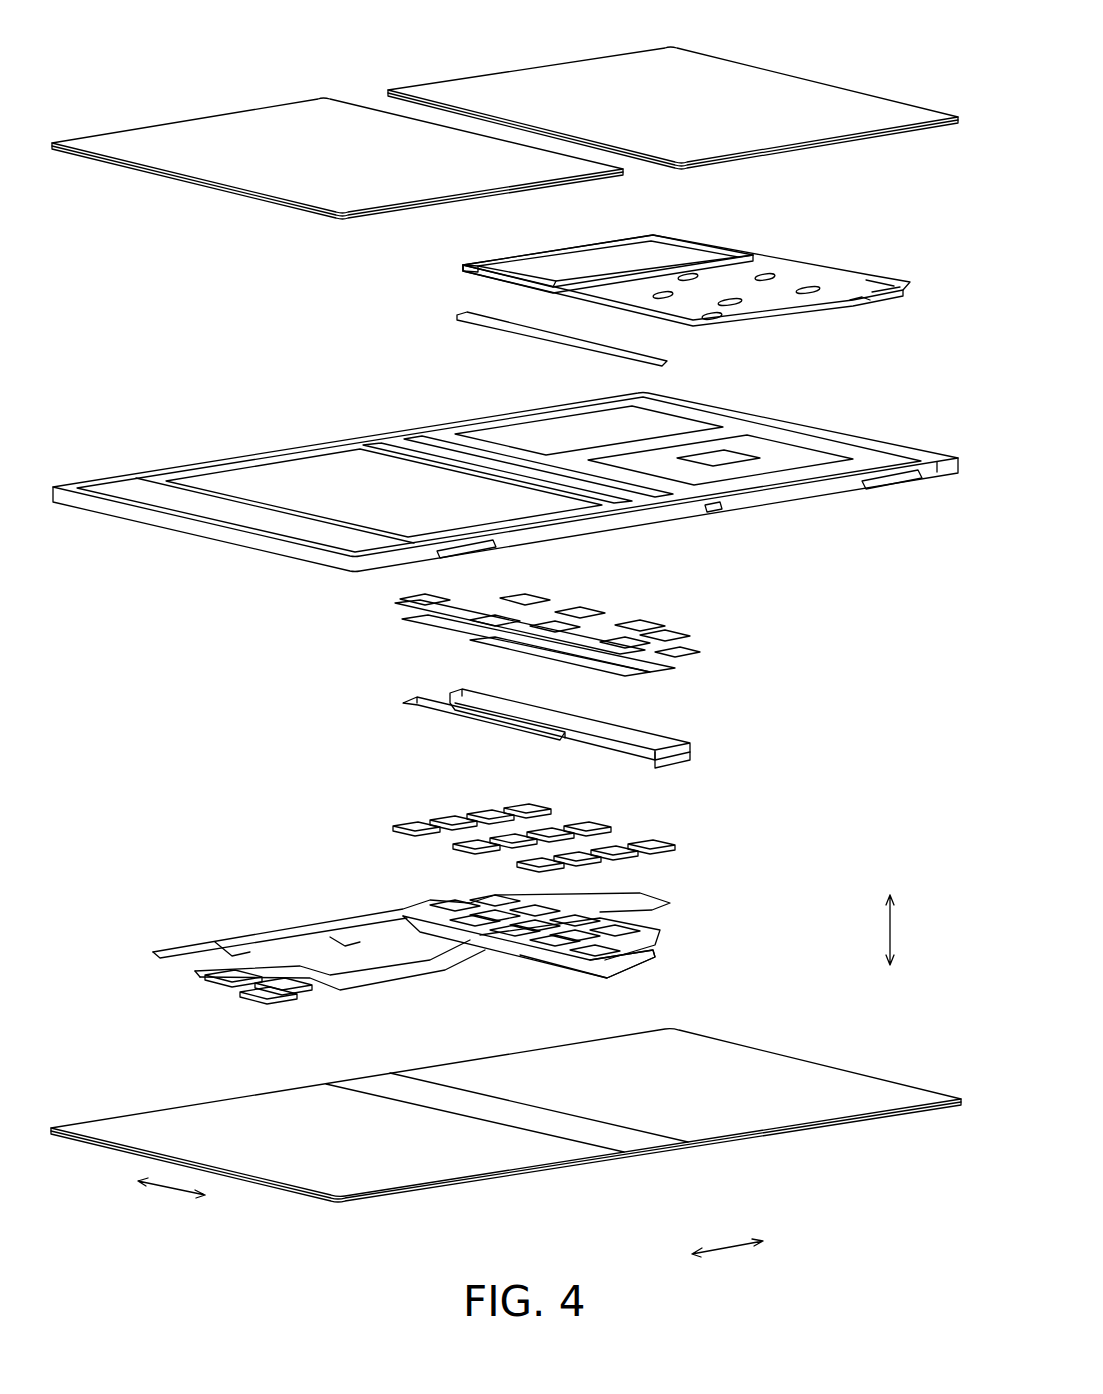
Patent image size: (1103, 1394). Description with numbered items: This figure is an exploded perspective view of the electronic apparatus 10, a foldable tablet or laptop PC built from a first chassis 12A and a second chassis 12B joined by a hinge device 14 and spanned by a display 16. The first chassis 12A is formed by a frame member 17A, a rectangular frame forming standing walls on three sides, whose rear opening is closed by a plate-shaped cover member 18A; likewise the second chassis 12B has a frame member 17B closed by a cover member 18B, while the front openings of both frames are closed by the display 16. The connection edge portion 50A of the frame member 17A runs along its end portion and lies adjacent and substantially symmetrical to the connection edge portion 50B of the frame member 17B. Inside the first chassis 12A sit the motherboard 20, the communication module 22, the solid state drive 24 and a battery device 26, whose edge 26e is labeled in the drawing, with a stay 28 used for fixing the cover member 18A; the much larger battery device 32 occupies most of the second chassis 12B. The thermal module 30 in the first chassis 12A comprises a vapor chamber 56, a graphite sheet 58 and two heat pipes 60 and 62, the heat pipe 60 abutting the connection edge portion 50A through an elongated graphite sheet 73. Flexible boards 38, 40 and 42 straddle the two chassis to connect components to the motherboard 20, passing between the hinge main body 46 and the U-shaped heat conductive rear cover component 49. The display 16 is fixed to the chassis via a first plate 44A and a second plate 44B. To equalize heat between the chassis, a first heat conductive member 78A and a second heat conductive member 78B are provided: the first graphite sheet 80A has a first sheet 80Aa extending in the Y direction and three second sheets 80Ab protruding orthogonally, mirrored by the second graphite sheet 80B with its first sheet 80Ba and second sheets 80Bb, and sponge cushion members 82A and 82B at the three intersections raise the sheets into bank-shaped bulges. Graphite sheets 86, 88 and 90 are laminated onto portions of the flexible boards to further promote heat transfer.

The electronic apparatus 10 is at (108, 31).
The first chassis 12A is at (811, 379).
The second chassis 12B is at (126, 444).
The hinge device 14 is at (587, 949).
The display 16 is at (652, 1145).
The frame member 17A is at (808, 503).
The frame member 17B is at (250, 545).
The cover member 18A is at (622, 70).
The cover member 18B is at (202, 128).
The motherboard 20 is at (820, 438).
The communication module 22 is at (830, 476).
The solid state drive 24 is at (755, 433).
The battery device 26 is at (665, 415).
The edge of recess 26e is at (565, 418).
The stay 28 is at (700, 430).
The thermal module 30 is at (754, 222).
The battery device 32 is at (260, 480).
The flexible board 38 is at (672, 942).
The flexible board 40 is at (365, 970).
The flexible board 42 is at (290, 943).
The first plate 44A is at (803, 1120).
The second plate 44B is at (480, 1168).
The hinge main body 46 is at (645, 968).
The rear cover component 49 is at (690, 760).
The connection edge portion 50A is at (388, 432).
The connection edge portion 50B is at (348, 440).
The vapor chamber 56 is at (805, 270).
The graphite sheet 58 is at (672, 240).
The heat pipe 60 is at (458, 270).
The heat pipe 62 is at (640, 262).
The graphite sheet 73 is at (462, 322).
The first heat conductive member 78A is at (738, 578).
The second heat conductive member 78B is at (387, 663).
The first graphite sheet 80A is at (726, 617).
The first sheet 80Aa is at (680, 655).
The second sheet 80Ab is at (590, 600).
The second graphite sheet 80B is at (527, 660).
The first sheet 80Ba is at (620, 680).
The second sheet 80Bb is at (430, 624).
The first cushion member 82A is at (522, 605).
The second cushion member 82B is at (400, 605).
The graphite sheet 86 is at (668, 840).
The graphite sheet 88 is at (610, 822).
The graphite sheet 90 is at (540, 802).